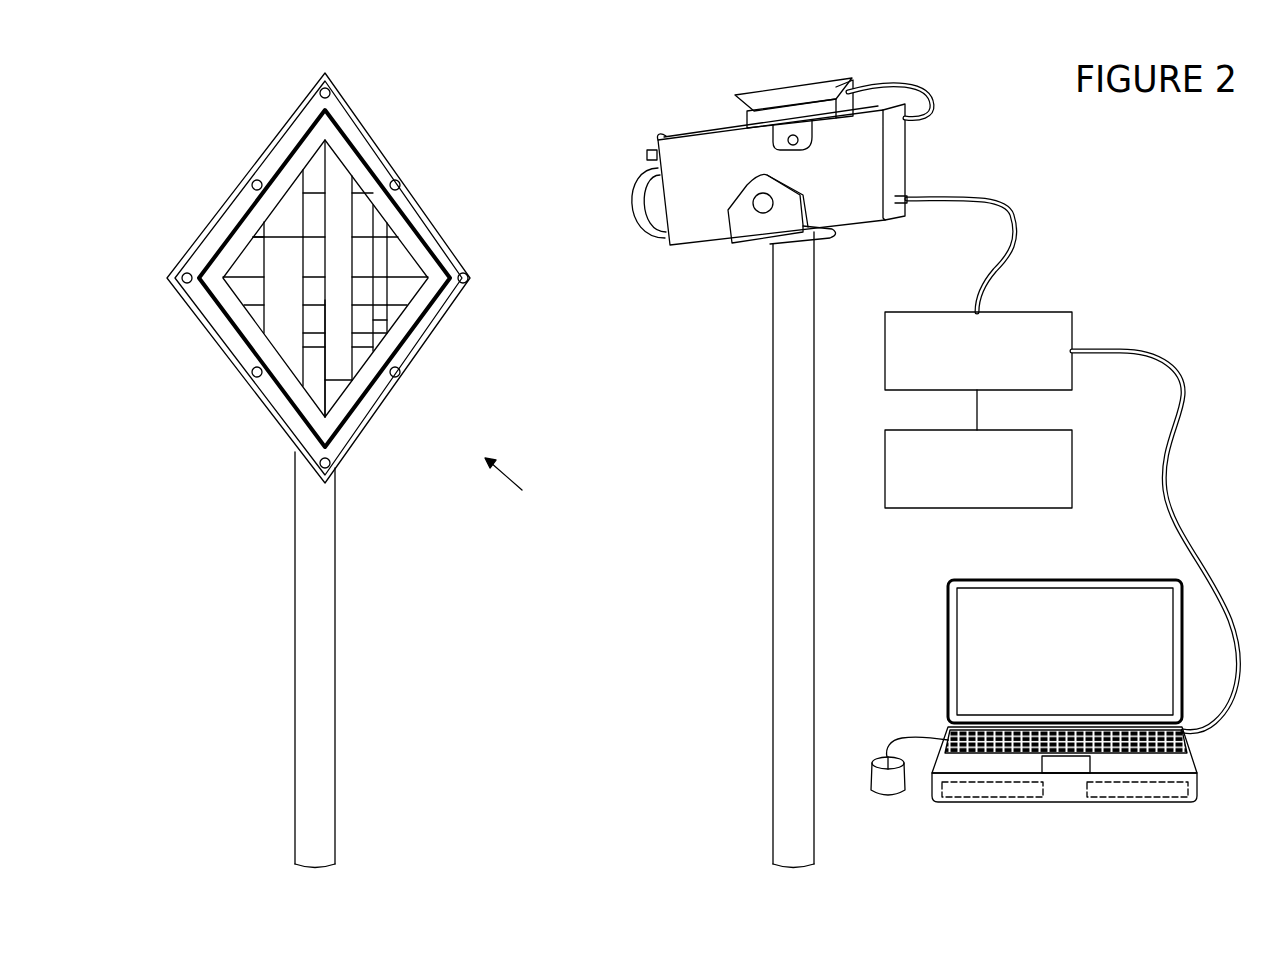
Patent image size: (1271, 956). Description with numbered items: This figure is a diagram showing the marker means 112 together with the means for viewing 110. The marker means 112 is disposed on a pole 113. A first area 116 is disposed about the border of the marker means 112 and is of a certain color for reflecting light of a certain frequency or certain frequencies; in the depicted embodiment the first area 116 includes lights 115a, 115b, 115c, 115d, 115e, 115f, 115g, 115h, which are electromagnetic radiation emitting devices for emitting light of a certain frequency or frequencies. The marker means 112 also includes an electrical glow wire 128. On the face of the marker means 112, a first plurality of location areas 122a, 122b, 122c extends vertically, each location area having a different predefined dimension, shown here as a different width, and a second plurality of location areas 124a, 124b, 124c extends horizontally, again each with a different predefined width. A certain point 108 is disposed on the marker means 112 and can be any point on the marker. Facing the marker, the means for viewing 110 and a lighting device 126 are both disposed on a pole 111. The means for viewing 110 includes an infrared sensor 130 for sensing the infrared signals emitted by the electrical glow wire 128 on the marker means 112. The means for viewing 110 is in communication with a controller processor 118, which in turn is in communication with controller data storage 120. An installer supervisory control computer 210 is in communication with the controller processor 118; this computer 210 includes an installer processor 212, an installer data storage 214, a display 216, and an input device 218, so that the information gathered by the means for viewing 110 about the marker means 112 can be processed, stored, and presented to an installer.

The certain point 108 is at (315, 265).
The means for viewing 110 is at (697, 226).
The pole 111 is at (808, 632).
The marker means 112 is at (522, 490).
The pole 113 is at (330, 632).
The light 115a is at (333, 91).
The light 115b is at (402, 184).
The light 115c is at (470, 278).
The light 115d is at (400, 375).
The light 115e is at (337, 466).
The light 115f is at (257, 377).
The light 115g is at (188, 283).
The light 115h is at (255, 182).
The first area 116 is at (365, 138).
The controller processor 118 is at (884, 350).
The controller data storage 120 is at (884, 468).
The location area 122a is at (282, 232).
The location area 122b is at (343, 374).
The location area 122c is at (385, 321).
The location area 124a is at (315, 210).
The location area 124b is at (247, 283).
The location area 124c is at (312, 341).
The lighting device 126 is at (765, 92).
The electrical glow wire 128 is at (428, 226).
The infrared sensor 130 is at (650, 153).
The installer supervisory control computer 210 is at (1180, 770).
The installer processor 212 is at (992, 797).
The installer data storage 214 is at (1136, 797).
The display 216 is at (977, 630).
The input device 218 is at (873, 772).